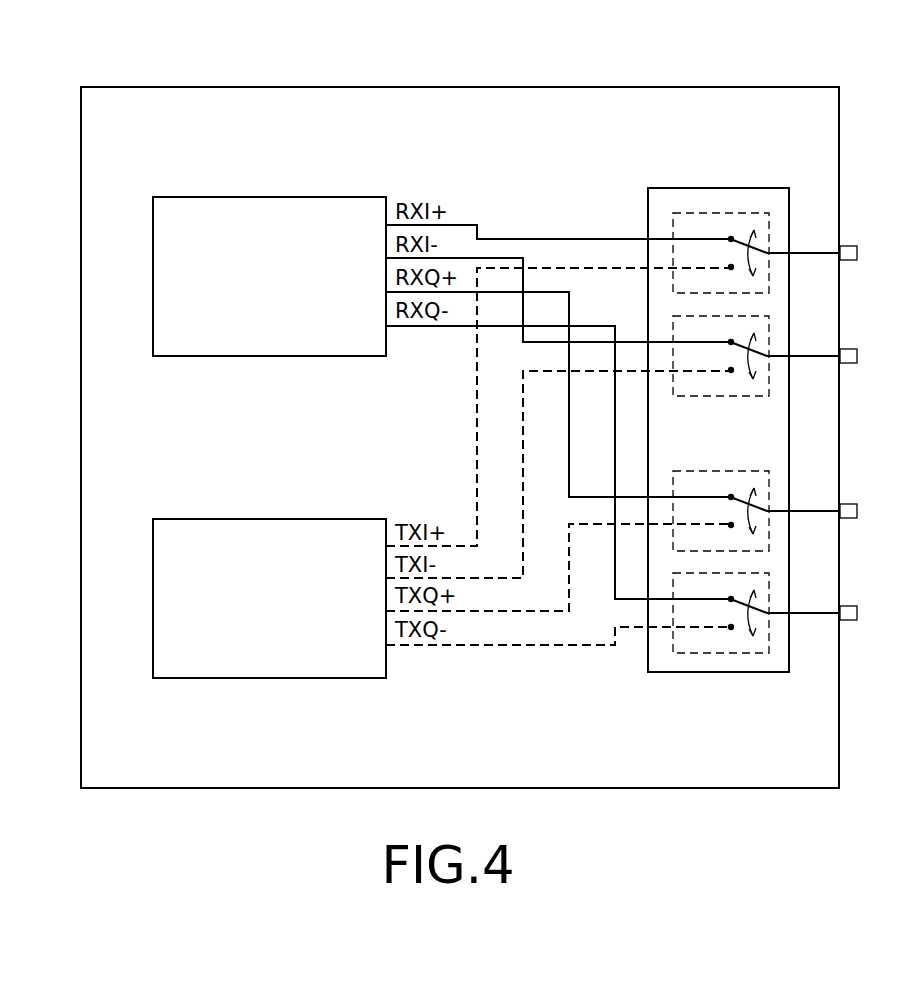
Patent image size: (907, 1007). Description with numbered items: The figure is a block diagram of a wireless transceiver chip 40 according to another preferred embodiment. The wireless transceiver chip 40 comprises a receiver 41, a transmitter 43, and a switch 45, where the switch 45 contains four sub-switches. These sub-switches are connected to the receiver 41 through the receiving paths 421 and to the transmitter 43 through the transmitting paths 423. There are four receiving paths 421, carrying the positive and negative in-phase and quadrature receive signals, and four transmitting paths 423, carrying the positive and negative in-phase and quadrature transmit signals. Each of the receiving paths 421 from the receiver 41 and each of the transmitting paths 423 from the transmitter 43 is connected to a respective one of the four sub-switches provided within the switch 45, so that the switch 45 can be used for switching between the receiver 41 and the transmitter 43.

The wireless transceiver chip 40 is at (537, 87).
The receiver 41 is at (272, 199).
The transmitter 43 is at (272, 521).
The switch 45 is at (719, 191).
The receiving paths 421 is at (494, 202).
The transmitting paths 423 is at (495, 655).